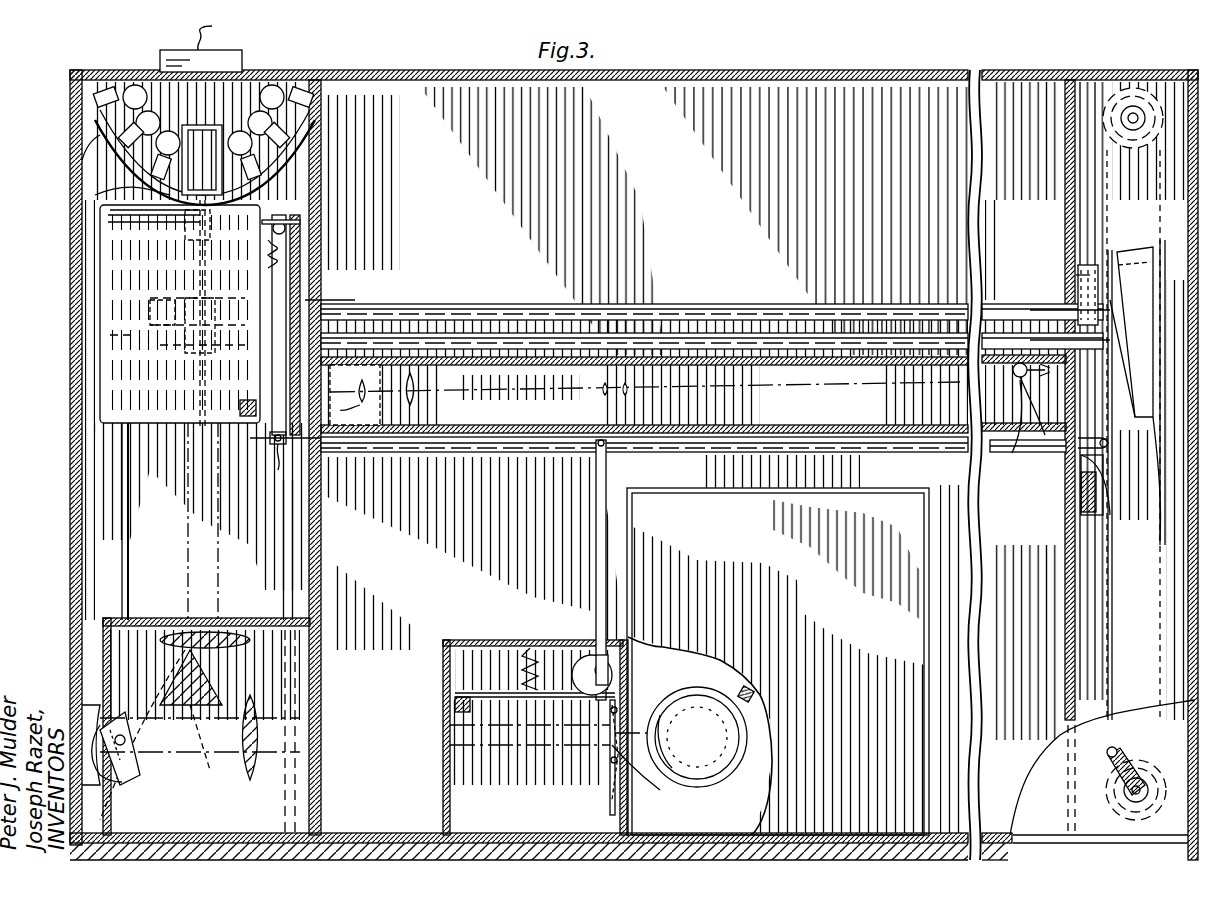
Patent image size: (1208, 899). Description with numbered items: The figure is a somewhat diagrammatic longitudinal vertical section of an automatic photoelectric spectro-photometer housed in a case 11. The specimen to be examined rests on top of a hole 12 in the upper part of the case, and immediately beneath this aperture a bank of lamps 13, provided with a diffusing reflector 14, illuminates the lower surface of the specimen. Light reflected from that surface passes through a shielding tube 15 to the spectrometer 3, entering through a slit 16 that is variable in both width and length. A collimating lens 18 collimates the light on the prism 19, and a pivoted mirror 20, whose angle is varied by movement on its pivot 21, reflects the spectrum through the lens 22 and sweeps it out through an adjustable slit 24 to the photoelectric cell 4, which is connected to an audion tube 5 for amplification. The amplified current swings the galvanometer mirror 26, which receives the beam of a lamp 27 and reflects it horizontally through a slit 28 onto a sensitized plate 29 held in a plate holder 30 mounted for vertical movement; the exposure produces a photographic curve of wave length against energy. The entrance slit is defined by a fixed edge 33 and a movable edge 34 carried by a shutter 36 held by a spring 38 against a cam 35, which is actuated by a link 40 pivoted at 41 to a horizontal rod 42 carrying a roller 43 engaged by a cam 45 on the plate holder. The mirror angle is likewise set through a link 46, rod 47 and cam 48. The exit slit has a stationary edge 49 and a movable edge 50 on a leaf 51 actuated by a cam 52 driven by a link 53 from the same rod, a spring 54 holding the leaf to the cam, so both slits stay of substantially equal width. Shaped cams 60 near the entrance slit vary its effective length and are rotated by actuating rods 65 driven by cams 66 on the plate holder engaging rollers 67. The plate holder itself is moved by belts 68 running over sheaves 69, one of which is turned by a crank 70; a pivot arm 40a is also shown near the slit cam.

The spectrometer 3 is at (241, 732).
The photoelectric cell 4 is at (697, 737).
The audion tube 5 is at (206, 30).
The case 11 is at (458, 72).
The hole 12 is at (232, 72).
The bank of lamps 13 is at (204, 145).
The diffusing reflector 14 is at (98, 136).
The shielding tube 15 is at (90, 185).
The slit 16 is at (200, 212).
The collimating lens 18 is at (185, 632).
The prism 19 is at (172, 690).
The pivoted mirror 20 is at (130, 758).
The pivot 21 is at (118, 770).
The lens 22 is at (250, 782).
The adjustable slit 24 is at (612, 735).
The galvanometer mirror 26 is at (360, 398).
The lamp 27 is at (1014, 452).
The slit 28 is at (1055, 435).
The sensitized film or plate 29 is at (1078, 262).
The plate holder 30 is at (1090, 265).
The fixed edge 33 is at (180, 410).
The movable edge 34 is at (217, 227).
The cam 35 is at (272, 258).
The movable leaf or shutter 36 is at (280, 212).
The spring 38 is at (332, 289).
The link 40 is at (278, 410).
The pivot arm 40a is at (362, 406).
The pivot 41 is at (273, 469).
The horizontal rod 42 is at (382, 452).
The roller 43 is at (1106, 475).
The cam 45 is at (1110, 438).
The link 46 is at (122, 558).
The rod 47 is at (465, 330).
The cam 48 is at (1126, 252).
The stationary edge 49 is at (641, 786).
The movable edge 50 is at (640, 720).
The leaf 51 is at (490, 690).
The cam 52 is at (588, 660).
The link 53 is at (607, 522).
The spring 54 is at (530, 648).
The cams 60 is at (300, 215).
The actuating rods 65 is at (518, 330).
The cams 66 is at (1105, 292).
The rollers 67 is at (1108, 305).
The belts 68 is at (1162, 575).
The sheaves 69 is at (1138, 90).
The crank 70 is at (1120, 760).